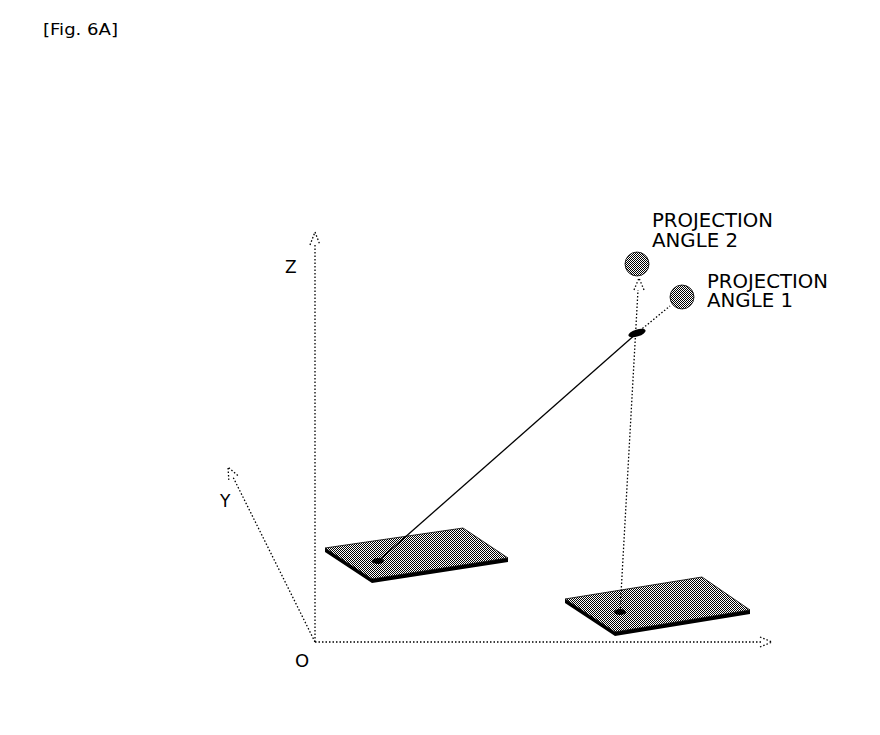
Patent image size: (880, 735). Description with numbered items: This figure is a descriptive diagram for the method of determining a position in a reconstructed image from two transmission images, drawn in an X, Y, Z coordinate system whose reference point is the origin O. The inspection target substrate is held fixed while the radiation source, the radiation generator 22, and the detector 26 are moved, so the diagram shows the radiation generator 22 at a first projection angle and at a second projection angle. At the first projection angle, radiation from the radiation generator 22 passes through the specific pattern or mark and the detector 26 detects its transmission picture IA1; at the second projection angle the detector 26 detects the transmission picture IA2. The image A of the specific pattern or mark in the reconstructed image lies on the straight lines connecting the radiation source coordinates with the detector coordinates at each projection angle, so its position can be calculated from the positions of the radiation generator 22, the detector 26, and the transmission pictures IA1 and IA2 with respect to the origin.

The radiation generator 22 is at (635, 253).
The detector 26 is at (380, 542).
The image of specific pattern or mark in three-dimensional image A is at (645, 337).
The transmission picture IA1 is at (390, 562).
The transmission picture IA2 is at (633, 615).